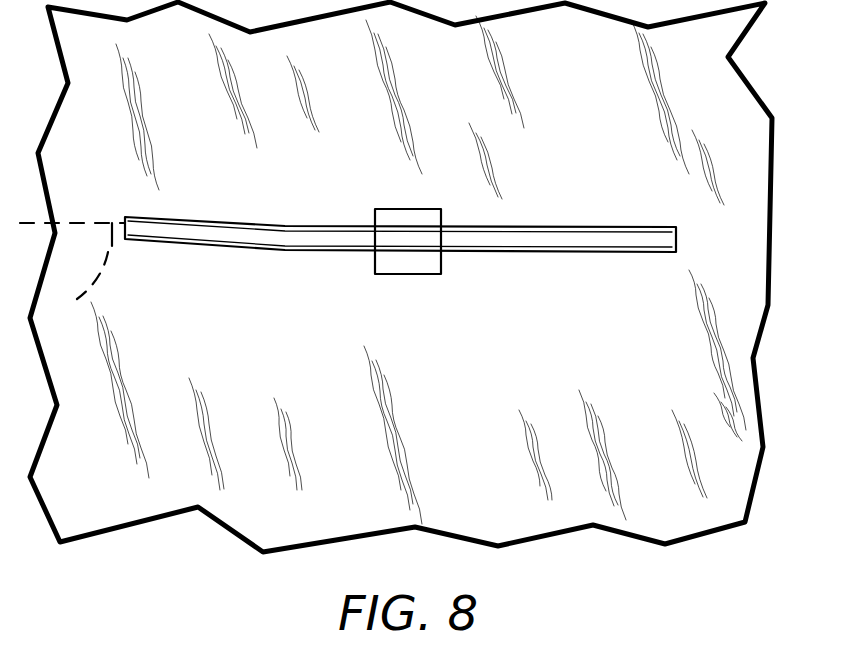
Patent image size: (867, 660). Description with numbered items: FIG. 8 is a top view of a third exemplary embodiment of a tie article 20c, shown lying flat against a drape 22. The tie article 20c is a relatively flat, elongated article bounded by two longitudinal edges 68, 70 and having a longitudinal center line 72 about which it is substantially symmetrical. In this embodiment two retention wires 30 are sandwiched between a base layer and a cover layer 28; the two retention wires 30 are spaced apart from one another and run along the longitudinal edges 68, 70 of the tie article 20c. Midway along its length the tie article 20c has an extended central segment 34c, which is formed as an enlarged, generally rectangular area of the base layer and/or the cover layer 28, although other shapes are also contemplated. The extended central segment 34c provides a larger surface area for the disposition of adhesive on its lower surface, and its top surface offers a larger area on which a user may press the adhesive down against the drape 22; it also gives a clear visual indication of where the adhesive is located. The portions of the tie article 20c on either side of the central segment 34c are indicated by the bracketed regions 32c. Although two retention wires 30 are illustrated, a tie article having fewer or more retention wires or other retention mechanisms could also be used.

The tie article 20c is at (554, 200).
The drape 22 is at (459, 437).
The cover layer 28 is at (601, 243).
The retention wires 30 is at (676, 227).
The strap section 32c is at (370, 325).
The extended central segment 34c is at (406, 267).
The longitudinal edge 68 is at (258, 224).
The longitudinal edge 70 is at (232, 250).
The longitudinal center line 72 is at (72, 271).